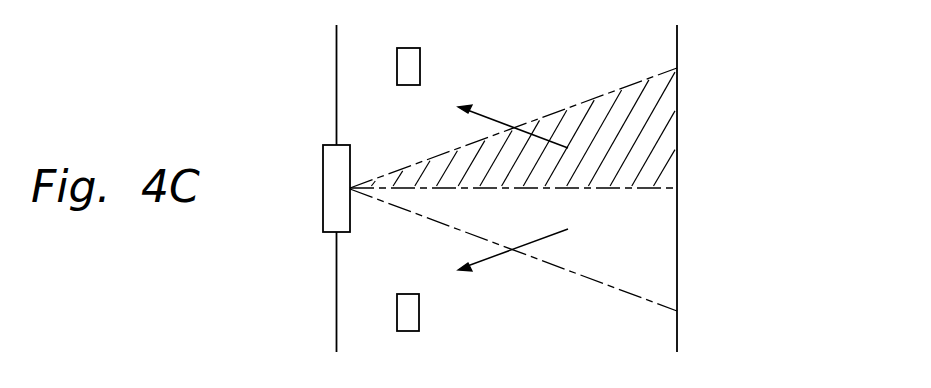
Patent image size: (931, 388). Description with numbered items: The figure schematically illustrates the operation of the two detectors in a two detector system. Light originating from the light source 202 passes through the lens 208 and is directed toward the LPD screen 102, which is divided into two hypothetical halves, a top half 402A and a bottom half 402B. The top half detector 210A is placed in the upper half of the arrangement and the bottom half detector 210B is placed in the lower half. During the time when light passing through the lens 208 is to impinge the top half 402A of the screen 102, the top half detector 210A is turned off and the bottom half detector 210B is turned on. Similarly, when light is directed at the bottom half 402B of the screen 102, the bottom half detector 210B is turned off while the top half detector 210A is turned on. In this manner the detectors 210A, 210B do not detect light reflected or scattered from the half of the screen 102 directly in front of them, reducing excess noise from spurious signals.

The LPD screen 102 is at (723, 83).
The light source 202 is at (336, 88).
The lens 208 is at (323, 163).
The top half detector 210A is at (420, 61).
The bottom half detector 210B is at (419, 311).
The top half of the screen 402A is at (677, 124).
The bottom half of the screen 402B is at (677, 246).